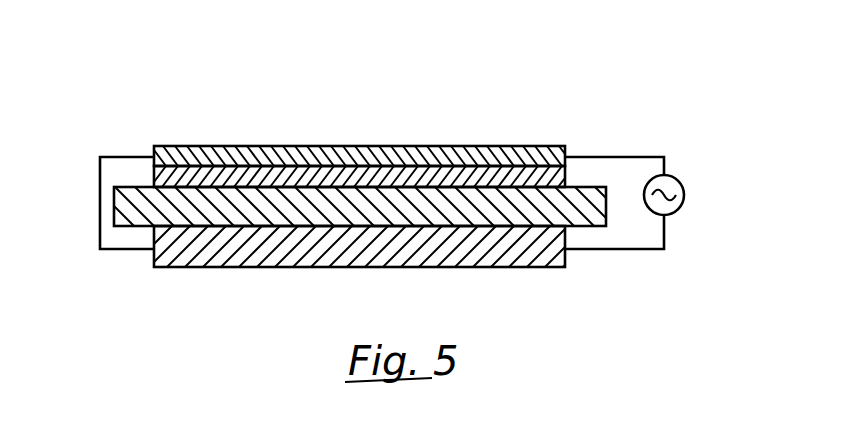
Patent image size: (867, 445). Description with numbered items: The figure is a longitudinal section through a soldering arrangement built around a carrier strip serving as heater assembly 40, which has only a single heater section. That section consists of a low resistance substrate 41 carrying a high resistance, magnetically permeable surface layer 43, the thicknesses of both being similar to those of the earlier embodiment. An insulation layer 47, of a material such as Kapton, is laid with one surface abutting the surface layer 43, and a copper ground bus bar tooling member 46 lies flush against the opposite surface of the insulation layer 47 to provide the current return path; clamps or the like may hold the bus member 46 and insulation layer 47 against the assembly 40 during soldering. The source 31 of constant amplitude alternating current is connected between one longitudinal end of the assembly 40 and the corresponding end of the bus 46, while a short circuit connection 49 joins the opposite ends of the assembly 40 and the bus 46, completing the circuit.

The heater assembly 40 is at (386, 186).
The low resistance substrate 41 is at (437, 148).
The high resistance, magnetically permeable surface layer 43 is at (312, 172).
The insulation layer 47 is at (597, 193).
The copper ground bus bar tooling member 46 is at (545, 253).
The short circuit connection 49 is at (112, 250).
The source of constant amplitude alternating current 31 is at (685, 184).